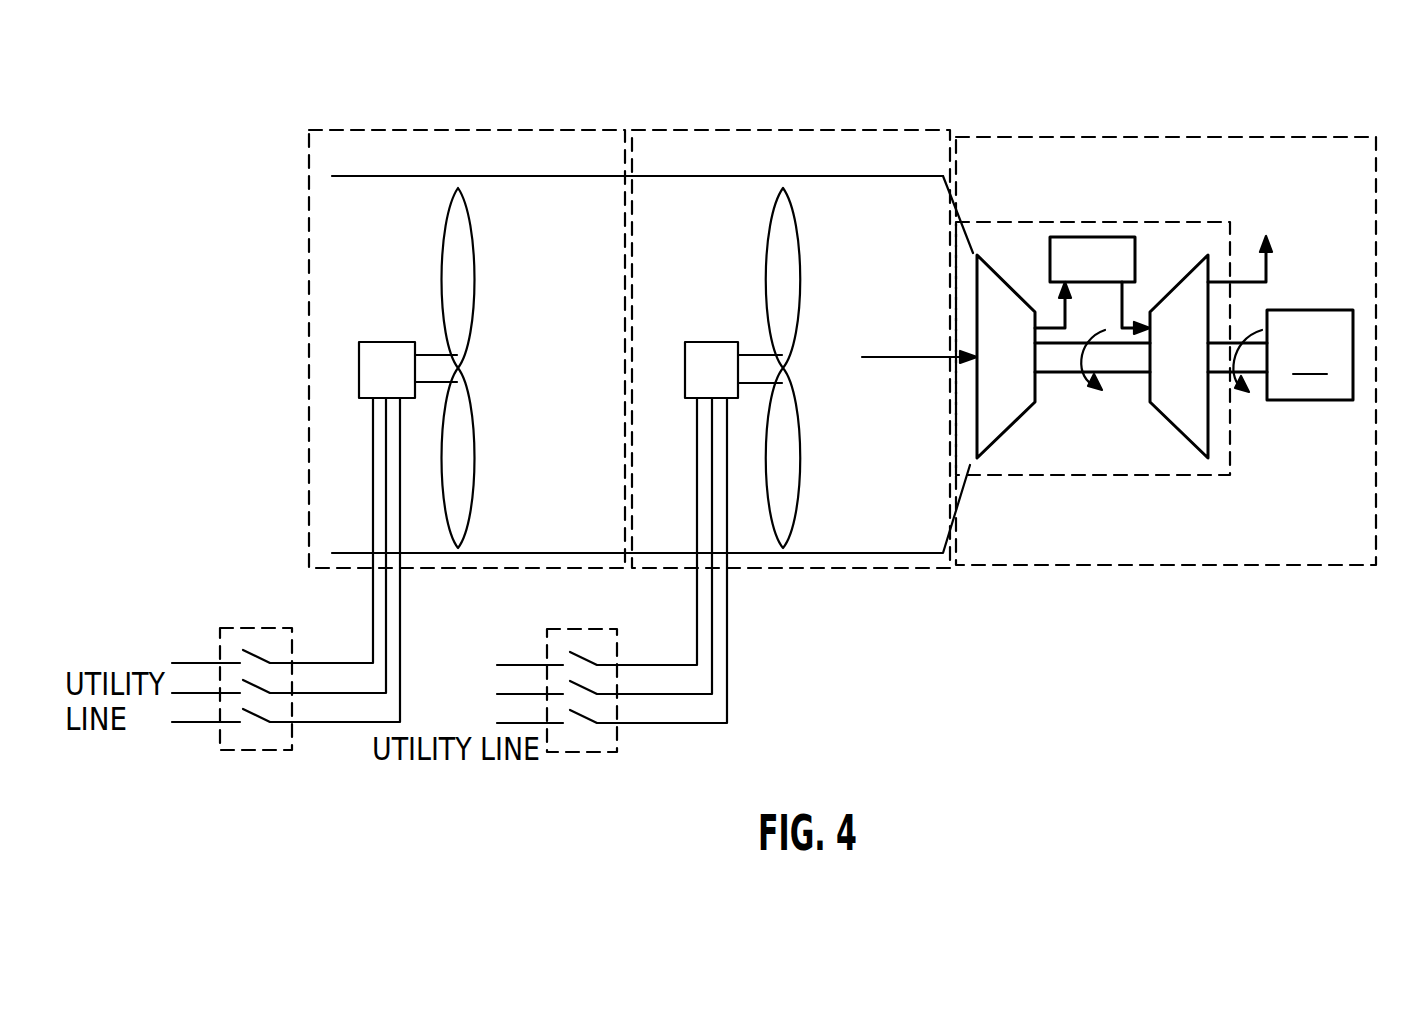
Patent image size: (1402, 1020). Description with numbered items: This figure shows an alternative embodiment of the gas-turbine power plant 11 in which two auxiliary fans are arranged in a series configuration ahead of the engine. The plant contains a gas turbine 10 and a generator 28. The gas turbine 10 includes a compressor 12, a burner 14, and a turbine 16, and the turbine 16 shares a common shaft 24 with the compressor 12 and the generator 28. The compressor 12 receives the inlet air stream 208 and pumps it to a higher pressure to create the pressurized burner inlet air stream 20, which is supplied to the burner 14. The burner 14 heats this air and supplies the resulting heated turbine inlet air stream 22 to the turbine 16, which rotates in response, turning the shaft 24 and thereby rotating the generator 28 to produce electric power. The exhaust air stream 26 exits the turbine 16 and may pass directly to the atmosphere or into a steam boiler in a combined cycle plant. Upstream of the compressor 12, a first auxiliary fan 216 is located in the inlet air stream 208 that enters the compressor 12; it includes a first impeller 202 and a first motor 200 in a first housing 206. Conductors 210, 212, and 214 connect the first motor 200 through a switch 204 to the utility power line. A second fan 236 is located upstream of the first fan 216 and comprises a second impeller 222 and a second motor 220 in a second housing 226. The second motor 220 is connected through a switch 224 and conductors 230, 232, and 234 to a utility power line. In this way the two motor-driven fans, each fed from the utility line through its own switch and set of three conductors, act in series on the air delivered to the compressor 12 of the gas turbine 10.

The gas turbine 10 is at (1140, 215).
The gas-turbine power plant 11 is at (1225, 570).
The compressor 12 is at (998, 428).
The burner 14 is at (1095, 237).
The turbine 16 is at (1190, 415).
The burner inlet air stream 20 is at (1048, 325).
The turbine inlet air stream 22 is at (1122, 325).
The common shaft 24 is at (1070, 362).
The exhaust air stream 26 is at (1268, 268).
The generator 28 is at (1280, 355).
The first motor 200 is at (700, 352).
The first impeller 202 is at (765, 258).
The switch 204 is at (618, 747).
The first housing 206 is at (823, 176).
The inlet air stream 208 is at (903, 352).
The conductor 210 is at (727, 600).
The conductor 212 is at (712, 667).
The conductor 214 is at (697, 640).
The first auxiliary fan 216 is at (715, 127).
The second motor 220 is at (362, 352).
The second impeller 222 is at (442, 258).
The switch 224 is at (293, 745).
The second housing 226 is at (557, 176).
The conductor 230 is at (400, 597).
The conductor 232 is at (387, 667).
The conductor 234 is at (370, 640).
The second fan 236 is at (428, 126).